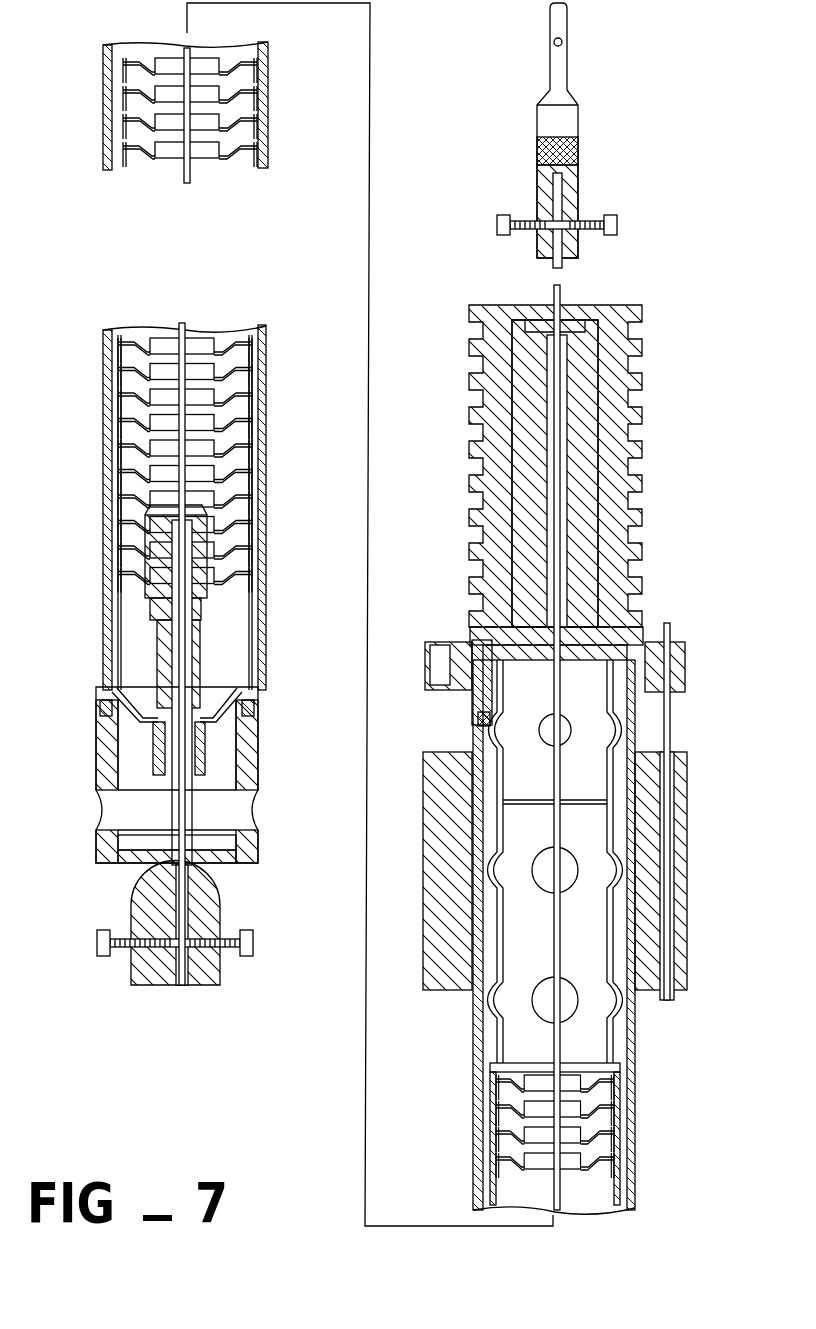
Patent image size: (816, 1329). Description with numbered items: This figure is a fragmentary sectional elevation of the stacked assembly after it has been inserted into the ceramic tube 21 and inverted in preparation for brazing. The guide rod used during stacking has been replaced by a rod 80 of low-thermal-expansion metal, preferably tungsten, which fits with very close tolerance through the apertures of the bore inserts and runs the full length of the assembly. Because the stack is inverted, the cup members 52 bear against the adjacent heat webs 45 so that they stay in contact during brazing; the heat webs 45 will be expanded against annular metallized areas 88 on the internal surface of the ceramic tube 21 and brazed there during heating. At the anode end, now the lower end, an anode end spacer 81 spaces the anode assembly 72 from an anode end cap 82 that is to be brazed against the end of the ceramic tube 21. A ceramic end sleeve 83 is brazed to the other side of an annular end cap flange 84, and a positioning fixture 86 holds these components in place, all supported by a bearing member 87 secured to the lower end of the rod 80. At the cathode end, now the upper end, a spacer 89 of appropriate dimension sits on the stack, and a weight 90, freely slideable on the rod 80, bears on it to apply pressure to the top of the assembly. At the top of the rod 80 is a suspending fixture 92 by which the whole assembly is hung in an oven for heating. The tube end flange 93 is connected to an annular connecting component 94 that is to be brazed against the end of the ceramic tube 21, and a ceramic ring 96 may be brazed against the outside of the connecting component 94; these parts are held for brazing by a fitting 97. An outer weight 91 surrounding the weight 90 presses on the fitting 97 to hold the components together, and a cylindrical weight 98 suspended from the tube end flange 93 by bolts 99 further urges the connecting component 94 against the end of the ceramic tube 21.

The ceramic tube 21 is at (268, 133).
The heat web 45 is at (222, 170).
The cup member 52 is at (220, 340).
The anode assembly 72 is at (84, 512).
The rod 80 is at (195, 58).
The anode end spacer 81 is at (115, 655).
The anode end cap 82 is at (225, 705).
The ceramic end sleeve 83 is at (100, 714).
The end cap flange 84 is at (110, 700).
The positioning fixture 86 is at (96, 762).
The bearing member 87 is at (222, 915).
The metallized areas 88 is at (103, 490).
The spacer 89 is at (500, 932).
The weight 90 is at (530, 520).
The outer weight 91 is at (615, 445).
The suspending fixture 92 is at (580, 125).
The tube end flange 93 is at (686, 660).
The connecting component 94 is at (470, 702).
The ceramic ring 96 is at (475, 720).
The fitting 97 is at (473, 640).
The cylindrical weight 98 is at (445, 820).
The bolts 99 is at (671, 748).